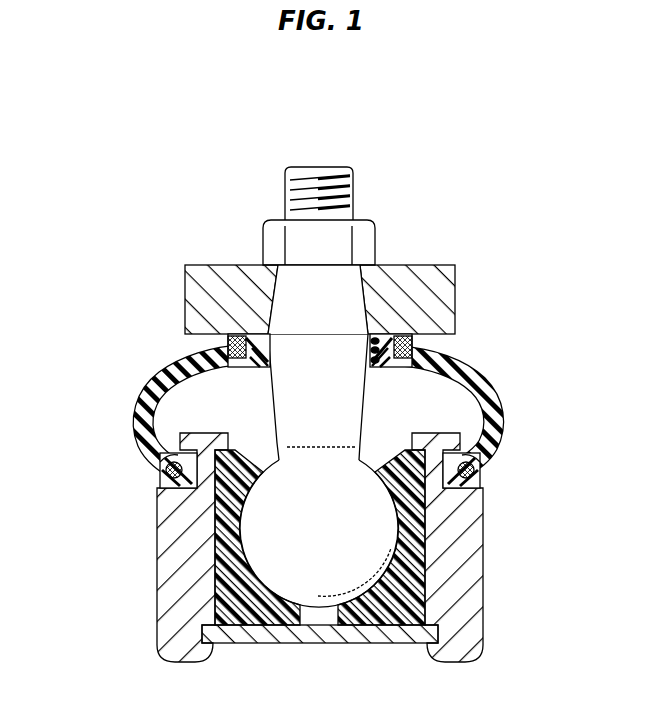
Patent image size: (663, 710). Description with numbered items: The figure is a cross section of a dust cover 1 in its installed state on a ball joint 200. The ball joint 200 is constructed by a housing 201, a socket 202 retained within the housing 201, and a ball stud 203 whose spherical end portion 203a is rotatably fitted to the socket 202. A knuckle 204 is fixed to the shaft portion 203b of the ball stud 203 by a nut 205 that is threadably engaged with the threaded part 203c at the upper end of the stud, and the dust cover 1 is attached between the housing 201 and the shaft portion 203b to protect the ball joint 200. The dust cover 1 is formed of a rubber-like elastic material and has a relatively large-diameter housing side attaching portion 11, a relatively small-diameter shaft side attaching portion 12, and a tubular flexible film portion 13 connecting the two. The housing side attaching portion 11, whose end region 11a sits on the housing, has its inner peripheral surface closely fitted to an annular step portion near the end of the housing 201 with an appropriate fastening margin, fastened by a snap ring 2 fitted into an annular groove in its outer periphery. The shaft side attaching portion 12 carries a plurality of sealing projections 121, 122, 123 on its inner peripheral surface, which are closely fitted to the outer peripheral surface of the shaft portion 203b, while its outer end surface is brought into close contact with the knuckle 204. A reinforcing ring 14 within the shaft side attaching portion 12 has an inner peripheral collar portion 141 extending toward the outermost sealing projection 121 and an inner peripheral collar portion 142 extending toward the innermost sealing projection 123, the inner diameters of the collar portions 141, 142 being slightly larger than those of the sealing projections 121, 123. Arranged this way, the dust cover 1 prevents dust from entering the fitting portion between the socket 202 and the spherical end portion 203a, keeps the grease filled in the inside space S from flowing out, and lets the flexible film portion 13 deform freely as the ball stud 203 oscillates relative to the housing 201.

The dust cover 1 is at (344, 338).
The snap ring 2 is at (475, 470).
The housing side attaching portion 11 is at (325, 448).
The end face of large-diameter portion 11a is at (160, 468).
The shaft side attaching portion 12 is at (371, 297).
The outermost sealing projection 121 is at (368, 343).
The sealing projection 122 is at (368, 348).
The innermost sealing projection 123 is at (368, 362).
The flexible film portion 13 is at (500, 383).
The reinforcing ring 14 is at (371, 318).
The inner peripheral collar portion 141 is at (255, 333).
The inner peripheral collar portion 142 is at (262, 367).
The ball joint 200 is at (309, 361).
The housing 201 is at (467, 568).
The socket 202 is at (230, 608).
The ball stud 203 is at (223, 334).
The spherical end portion 203a is at (280, 537).
The shaft portion 203b is at (303, 278).
The threaded portion 203c is at (287, 193).
The knuckle 204 is at (222, 285).
The nut 205 is at (335, 238).
The inside space S is at (205, 397).